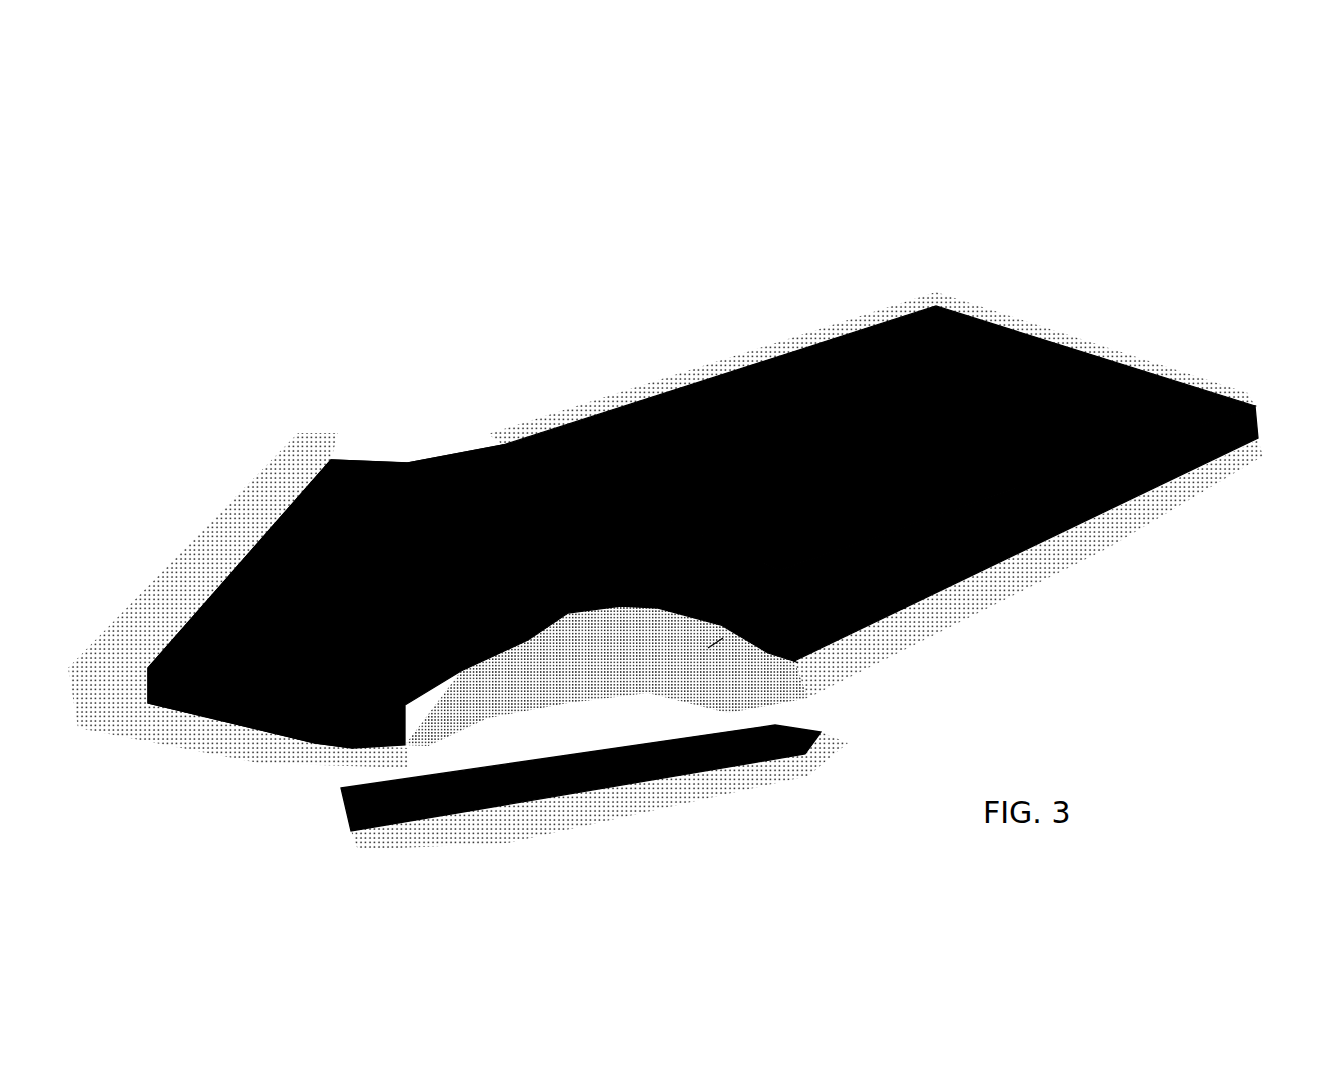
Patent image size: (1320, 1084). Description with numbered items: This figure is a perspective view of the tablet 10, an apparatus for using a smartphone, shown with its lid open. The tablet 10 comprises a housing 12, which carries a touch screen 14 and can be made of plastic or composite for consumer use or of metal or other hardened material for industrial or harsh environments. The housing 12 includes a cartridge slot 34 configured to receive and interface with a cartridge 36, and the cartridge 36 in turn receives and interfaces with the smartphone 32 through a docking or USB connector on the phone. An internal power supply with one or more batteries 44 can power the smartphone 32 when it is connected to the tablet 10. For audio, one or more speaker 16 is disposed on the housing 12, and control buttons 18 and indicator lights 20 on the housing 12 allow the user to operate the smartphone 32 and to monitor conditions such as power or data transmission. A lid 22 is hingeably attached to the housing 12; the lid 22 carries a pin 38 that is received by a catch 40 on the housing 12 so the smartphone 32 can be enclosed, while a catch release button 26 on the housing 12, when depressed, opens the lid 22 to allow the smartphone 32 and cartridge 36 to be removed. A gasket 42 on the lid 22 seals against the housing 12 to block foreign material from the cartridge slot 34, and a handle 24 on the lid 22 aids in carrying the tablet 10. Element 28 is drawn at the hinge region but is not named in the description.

The tablet 10 is at (665, 201).
The housing 12 is at (1185, 450).
The touch screen 14 is at (1108, 358).
The speaker 16 is at (905, 600).
The control buttons 18 is at (483, 450).
The indicator lights 20 is at (497, 440).
The lid 22 is at (323, 740).
The handle 24 is at (230, 547).
The catch release button 26 is at (830, 640).
The hinge 28 is at (450, 462).
The smartphone 32 is at (705, 645).
The cartridge slot 34 is at (632, 602).
The cartridge 36 is at (586, 578).
The pin 38 is at (367, 690).
The catch 40 is at (790, 655).
The gasket 42 is at (425, 663).
The batteries 44 is at (528, 558).